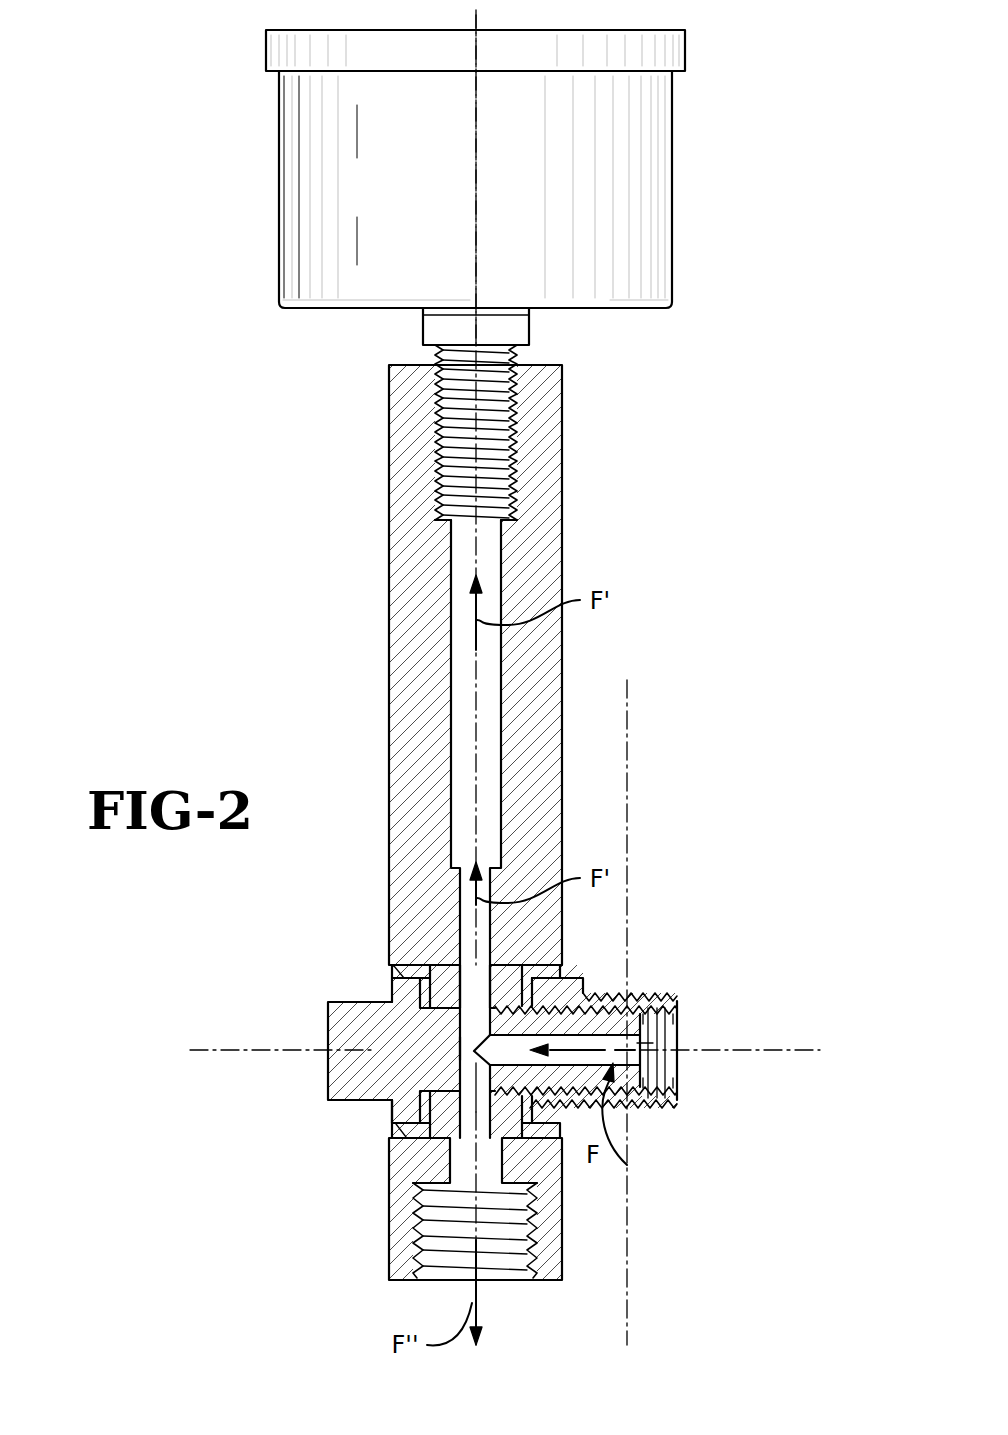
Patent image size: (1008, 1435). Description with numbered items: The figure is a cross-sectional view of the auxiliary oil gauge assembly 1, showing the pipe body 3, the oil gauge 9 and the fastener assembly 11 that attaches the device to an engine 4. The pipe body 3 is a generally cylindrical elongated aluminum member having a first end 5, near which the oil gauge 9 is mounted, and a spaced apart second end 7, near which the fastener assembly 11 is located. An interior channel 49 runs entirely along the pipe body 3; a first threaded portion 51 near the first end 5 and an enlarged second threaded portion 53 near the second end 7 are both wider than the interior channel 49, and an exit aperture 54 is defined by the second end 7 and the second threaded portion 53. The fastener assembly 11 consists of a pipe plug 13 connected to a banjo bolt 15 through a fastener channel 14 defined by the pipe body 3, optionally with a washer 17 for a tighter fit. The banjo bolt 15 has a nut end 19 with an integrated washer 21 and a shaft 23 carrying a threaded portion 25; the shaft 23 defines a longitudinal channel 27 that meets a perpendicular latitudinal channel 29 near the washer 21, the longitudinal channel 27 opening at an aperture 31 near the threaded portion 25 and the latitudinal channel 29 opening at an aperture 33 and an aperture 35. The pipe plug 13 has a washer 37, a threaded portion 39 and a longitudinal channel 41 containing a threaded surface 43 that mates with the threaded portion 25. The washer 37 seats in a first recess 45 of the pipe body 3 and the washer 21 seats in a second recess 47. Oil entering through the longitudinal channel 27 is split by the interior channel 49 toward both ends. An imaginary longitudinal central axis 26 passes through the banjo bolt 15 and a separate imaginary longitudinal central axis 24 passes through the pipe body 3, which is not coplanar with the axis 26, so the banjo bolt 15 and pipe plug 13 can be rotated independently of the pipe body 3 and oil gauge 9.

The auxiliary oil gauge assembly 1 is at (672, 470).
The pipe body 3 is at (388, 607).
The engine 4 is at (627, 1335).
The first end 5 is at (386, 377).
The second end 7 is at (370, 1268).
The oil gauge 9 is at (280, 168).
The fastener assembly 11 is at (336, 991).
The pipe plug 13 is at (678, 990).
The fastener channel 14 is at (443, 1008).
The banjo bolt 15 is at (326, 1093).
The washer 17 is at (425, 968).
The nut end 19 is at (353, 1098).
The integrated washer 21 is at (390, 993).
The shaft 23 is at (600, 1000).
The longitudinal central axis 24 is at (477, 213).
The threaded portion 25 is at (612, 1000).
The longitudinal central axis 26 is at (800, 1052).
The longitudinal channel 27 is at (555, 1118).
The latitudinal channel 29 is at (467, 1063).
The aperture 31 is at (653, 1043).
The aperture 33 is at (477, 1012).
The aperture 35 is at (440, 1136).
The washer 37 is at (545, 1128).
The threaded portion 39 is at (640, 1105).
The longitudinal channel 41 is at (665, 1022).
The threaded surface 43 is at (665, 1078).
The first recess 45 is at (588, 995).
The second recess 47 is at (393, 1115).
The interior channel 49 is at (463, 707).
The first threaded portion 51 is at (463, 500).
The second threaded portion 53 is at (517, 1255).
The exit aperture 54 is at (447, 1262).